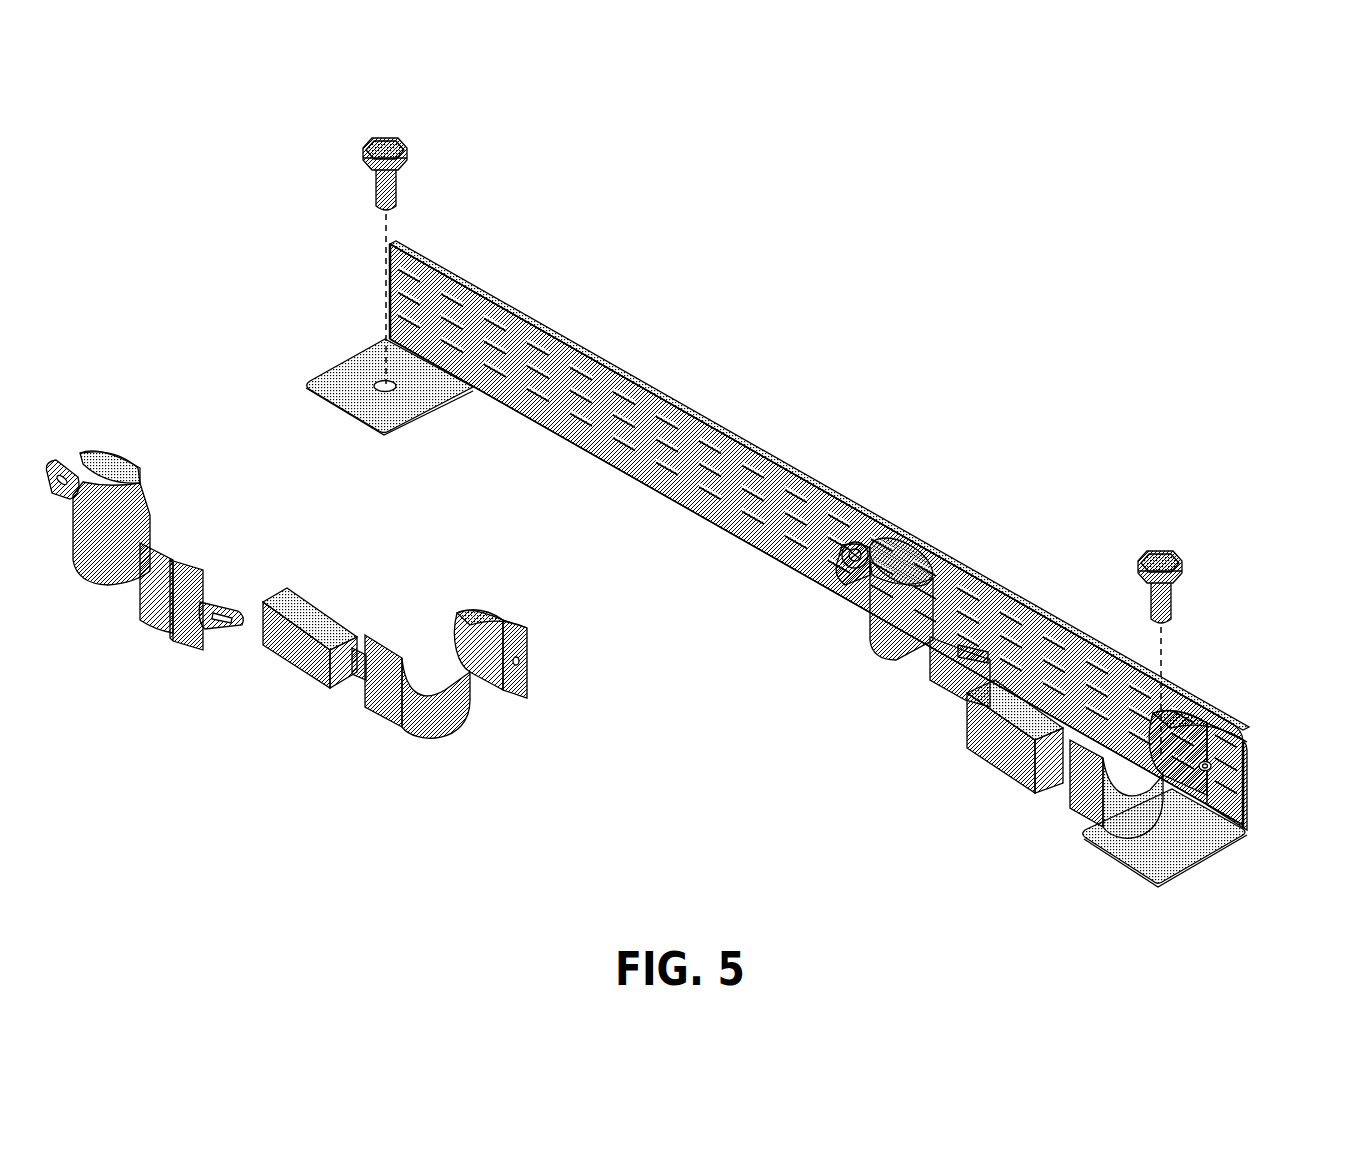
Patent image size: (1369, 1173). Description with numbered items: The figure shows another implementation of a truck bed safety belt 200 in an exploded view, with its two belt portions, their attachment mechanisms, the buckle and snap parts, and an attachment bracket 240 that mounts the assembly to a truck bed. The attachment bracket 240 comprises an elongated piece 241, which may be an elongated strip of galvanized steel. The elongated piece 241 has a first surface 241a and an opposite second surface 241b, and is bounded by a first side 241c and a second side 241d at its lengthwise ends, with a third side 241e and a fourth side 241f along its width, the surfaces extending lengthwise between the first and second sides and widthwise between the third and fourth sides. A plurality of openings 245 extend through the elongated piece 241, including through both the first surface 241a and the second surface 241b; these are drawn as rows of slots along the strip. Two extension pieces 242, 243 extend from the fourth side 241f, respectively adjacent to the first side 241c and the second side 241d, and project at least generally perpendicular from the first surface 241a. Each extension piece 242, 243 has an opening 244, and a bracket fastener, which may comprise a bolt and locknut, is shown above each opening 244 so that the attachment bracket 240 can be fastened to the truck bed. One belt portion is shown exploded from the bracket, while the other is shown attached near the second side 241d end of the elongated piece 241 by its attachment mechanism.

The truck bed safety belt 200 is at (1017, 125).
The attachment bracket 240 is at (873, 328).
The elongated piece 241 is at (853, 440).
The first surface 241a is at (690, 486).
The second surface 241b is at (749, 432).
The first side 241c is at (363, 268).
The second side 241d is at (1267, 787).
The third side 241e is at (690, 388).
The fourth side 241f is at (588, 483).
The extension piece 242 is at (346, 336).
The extension piece 243 is at (1213, 883).
The opening 244 is at (362, 378).
The openings 245 is at (615, 405).